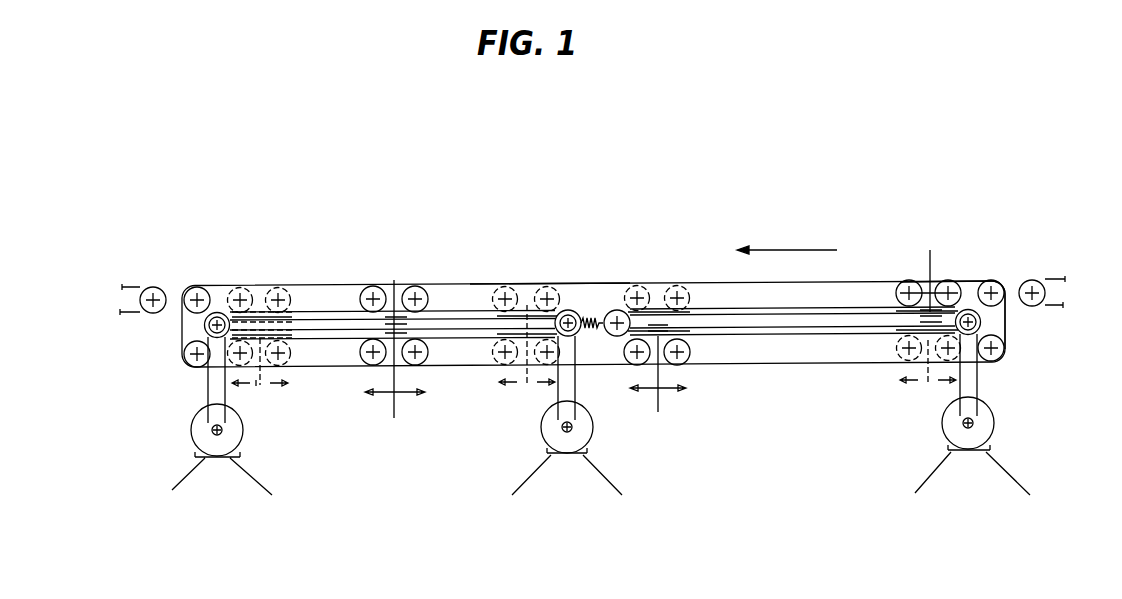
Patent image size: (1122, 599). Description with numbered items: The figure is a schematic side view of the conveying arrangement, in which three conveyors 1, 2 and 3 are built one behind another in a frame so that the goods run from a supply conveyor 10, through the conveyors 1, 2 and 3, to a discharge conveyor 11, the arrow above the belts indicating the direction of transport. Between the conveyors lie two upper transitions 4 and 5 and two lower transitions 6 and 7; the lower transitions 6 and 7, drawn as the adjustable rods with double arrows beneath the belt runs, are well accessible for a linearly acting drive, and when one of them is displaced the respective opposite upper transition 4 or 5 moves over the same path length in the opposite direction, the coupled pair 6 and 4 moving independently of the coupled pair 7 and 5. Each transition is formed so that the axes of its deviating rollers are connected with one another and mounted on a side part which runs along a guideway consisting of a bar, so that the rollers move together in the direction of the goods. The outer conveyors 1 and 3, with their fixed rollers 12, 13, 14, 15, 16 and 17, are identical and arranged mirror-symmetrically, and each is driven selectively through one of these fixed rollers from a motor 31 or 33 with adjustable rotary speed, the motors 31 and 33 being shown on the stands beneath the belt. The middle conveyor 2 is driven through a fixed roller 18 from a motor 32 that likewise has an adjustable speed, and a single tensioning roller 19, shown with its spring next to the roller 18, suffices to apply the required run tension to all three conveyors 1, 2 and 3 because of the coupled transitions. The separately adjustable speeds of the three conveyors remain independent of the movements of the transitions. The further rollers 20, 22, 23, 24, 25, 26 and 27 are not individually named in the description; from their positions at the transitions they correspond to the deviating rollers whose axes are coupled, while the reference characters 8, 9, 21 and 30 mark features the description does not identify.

The conveyor 1 is at (975, 281).
The conveyor 2 is at (470, 285).
The conveyor 3 is at (345, 285).
The upper transition 4 is at (931, 290).
The upper transition 5 is at (396, 283).
The lower transition 6 is at (658, 382).
The lower transition 7 is at (395, 414).
The belt end portion 8 is at (1010, 284).
The inlet gap 9 is at (175, 290).
The supply conveyor 10 is at (1048, 279).
The discharge conveyor 11 is at (147, 287).
The fixed roller 12 is at (1005, 306).
The fixed roller 13 is at (1002, 356).
The fixed roller 14 is at (982, 325).
The fixed roller 15 is at (200, 287).
The fixed roller 16 is at (205, 326).
The fixed roller 17 is at (190, 363).
The fixed roller 18 is at (572, 312).
The tensioning roller 19 is at (619, 311).
The guide roller 20 is at (910, 281).
The belt section 21 is at (955, 282).
The guide roller 22 is at (682, 364).
The guide roller 23 is at (636, 365).
The guide roller 24 is at (375, 286).
The guide roller 25 is at (420, 286).
The guide roller 26 is at (418, 363).
The guide roller 27 is at (364, 365).
The belt section 30 is at (568, 287).
The motor 31 is at (943, 420).
The motor 32 is at (541, 428).
The motor 33 is at (192, 437).